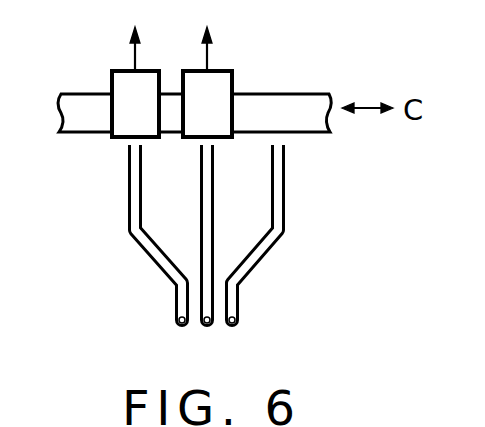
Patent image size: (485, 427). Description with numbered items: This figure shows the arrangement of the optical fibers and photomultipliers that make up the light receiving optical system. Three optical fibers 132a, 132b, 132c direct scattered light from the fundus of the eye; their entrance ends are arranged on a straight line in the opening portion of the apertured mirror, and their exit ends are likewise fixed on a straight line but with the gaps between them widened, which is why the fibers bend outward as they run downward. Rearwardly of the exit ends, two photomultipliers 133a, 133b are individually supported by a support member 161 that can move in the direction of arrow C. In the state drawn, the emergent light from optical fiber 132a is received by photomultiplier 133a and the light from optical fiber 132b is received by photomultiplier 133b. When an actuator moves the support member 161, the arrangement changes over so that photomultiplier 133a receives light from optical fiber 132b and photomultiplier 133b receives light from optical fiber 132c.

The photomultiplier 133a is at (122, 83).
The photomultiplier 133b is at (222, 82).
The support member 161 is at (290, 103).
The optical fiber 132a is at (172, 280).
The optical fiber 132b is at (205, 227).
The optical fiber 132c is at (285, 208).